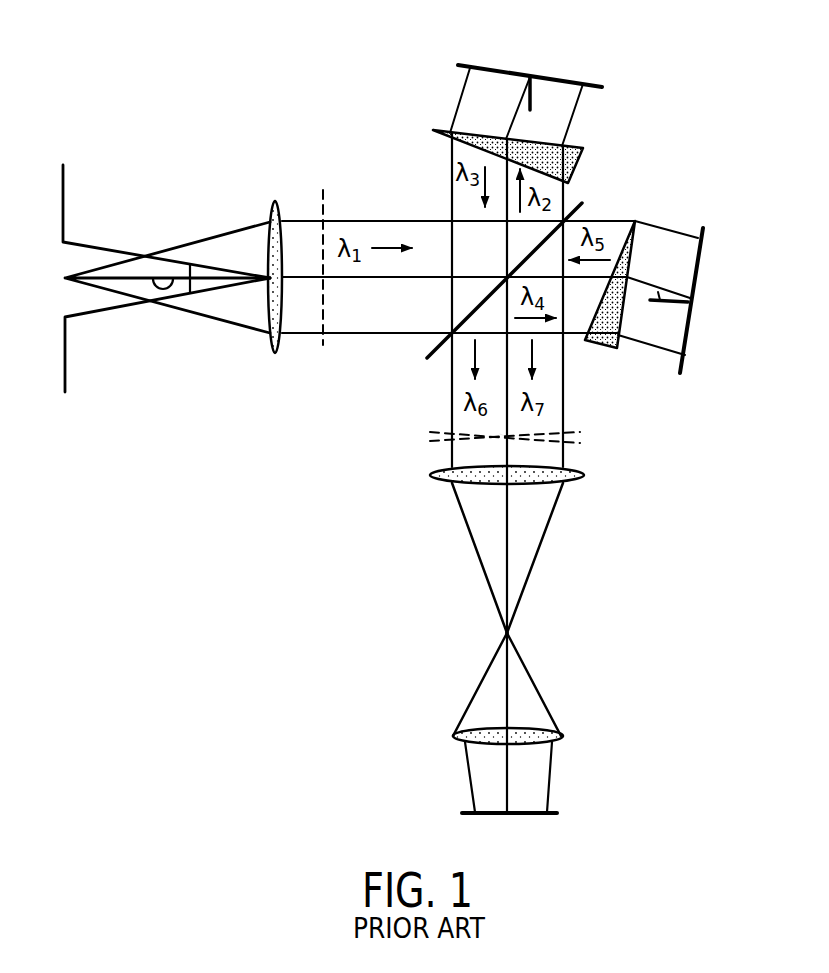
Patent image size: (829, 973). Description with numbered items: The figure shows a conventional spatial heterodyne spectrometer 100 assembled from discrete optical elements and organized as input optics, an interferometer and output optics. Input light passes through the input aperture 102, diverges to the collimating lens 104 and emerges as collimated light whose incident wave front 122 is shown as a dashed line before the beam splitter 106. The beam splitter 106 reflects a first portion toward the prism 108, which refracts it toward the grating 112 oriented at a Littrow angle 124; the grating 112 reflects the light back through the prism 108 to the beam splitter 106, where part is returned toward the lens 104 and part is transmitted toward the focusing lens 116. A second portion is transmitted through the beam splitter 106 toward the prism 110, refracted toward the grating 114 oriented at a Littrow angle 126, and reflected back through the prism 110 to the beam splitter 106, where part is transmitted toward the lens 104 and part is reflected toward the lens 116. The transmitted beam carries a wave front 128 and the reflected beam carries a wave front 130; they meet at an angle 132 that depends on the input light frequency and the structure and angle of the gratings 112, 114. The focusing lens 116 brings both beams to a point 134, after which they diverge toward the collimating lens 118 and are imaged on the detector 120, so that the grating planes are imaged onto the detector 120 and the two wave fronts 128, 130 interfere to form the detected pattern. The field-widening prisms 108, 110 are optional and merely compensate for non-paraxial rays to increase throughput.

The spectrometer 100 is at (138, 31).
The input aperture 102 is at (73, 295).
The collimating lens 104 is at (277, 357).
The beam splitter 106 is at (427, 358).
The prism 108 is at (583, 148).
The prism 110 is at (634, 220).
The grating 112 is at (600, 85).
The grating 114 is at (700, 229).
The focusing lens 116 is at (578, 483).
The collimating lens 118 is at (565, 733).
The detector 120 is at (547, 813).
The incident wave front 122 is at (323, 197).
The Littrow angle 124 is at (530, 75).
The Littrow angle 126 is at (688, 303).
The wave front 128 is at (580, 432).
The wave front 130 is at (430, 433).
The angle 132 is at (580, 441).
The point 134 is at (507, 632).